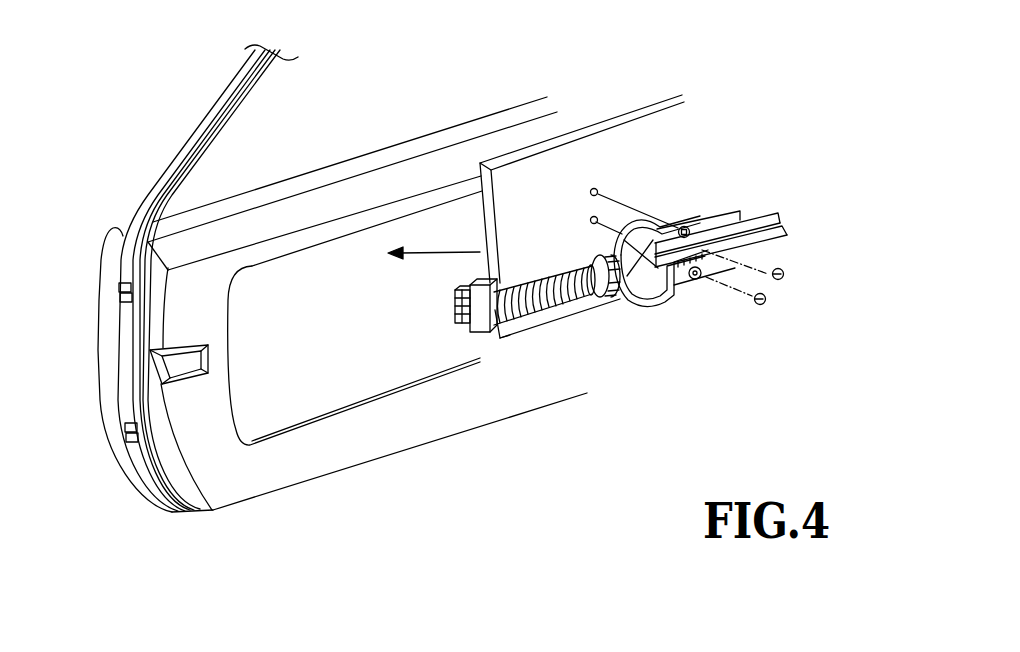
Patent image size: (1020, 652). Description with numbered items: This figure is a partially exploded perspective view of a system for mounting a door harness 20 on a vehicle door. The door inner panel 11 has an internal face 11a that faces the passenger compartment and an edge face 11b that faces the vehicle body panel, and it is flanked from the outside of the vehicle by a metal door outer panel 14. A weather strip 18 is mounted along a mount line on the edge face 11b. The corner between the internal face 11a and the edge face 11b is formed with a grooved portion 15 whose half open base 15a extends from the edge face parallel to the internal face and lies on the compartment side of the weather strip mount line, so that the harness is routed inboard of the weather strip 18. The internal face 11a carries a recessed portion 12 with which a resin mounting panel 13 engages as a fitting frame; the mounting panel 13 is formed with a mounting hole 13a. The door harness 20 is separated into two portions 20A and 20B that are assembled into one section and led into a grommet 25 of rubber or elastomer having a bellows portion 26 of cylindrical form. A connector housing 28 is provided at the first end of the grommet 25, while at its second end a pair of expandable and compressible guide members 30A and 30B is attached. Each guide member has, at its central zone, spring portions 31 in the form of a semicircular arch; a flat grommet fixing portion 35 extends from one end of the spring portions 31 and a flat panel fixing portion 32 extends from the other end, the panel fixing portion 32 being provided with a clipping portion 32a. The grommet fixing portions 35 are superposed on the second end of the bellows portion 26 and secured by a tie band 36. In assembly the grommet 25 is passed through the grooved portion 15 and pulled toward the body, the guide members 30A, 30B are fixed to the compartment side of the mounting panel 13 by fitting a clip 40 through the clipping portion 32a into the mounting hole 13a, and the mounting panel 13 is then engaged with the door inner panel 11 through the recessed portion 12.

The door inner panel 11 is at (258, 228).
The internal face 11a is at (270, 477).
The edge face 11b is at (210, 507).
The recessed portion 12 is at (333, 383).
The mounting panel 13 is at (568, 160).
The mounting hole 13a is at (596, 188).
The door outer panel 14 is at (112, 258).
The grooved portion 15 is at (153, 460).
The half open base 15a is at (140, 357).
The weather strip 18 is at (127, 323).
The door harness 20 is at (866, 153).
The first portion of door harness 20A is at (778, 211).
The second portion of door harness 20B is at (789, 238).
The grommet 25 is at (561, 307).
The bellows portion 26 is at (527, 313).
The connector housing 28 is at (453, 287).
The first guide member 30A is at (631, 216).
The second guide member 30B is at (661, 318).
The spring portions 31 is at (646, 230).
The panel fixing portion 32 is at (703, 240).
The clipping portion 32a is at (682, 227).
The grommet fixing portion 35 is at (600, 247).
The tie band 36 is at (606, 302).
The clip 40 is at (790, 280).